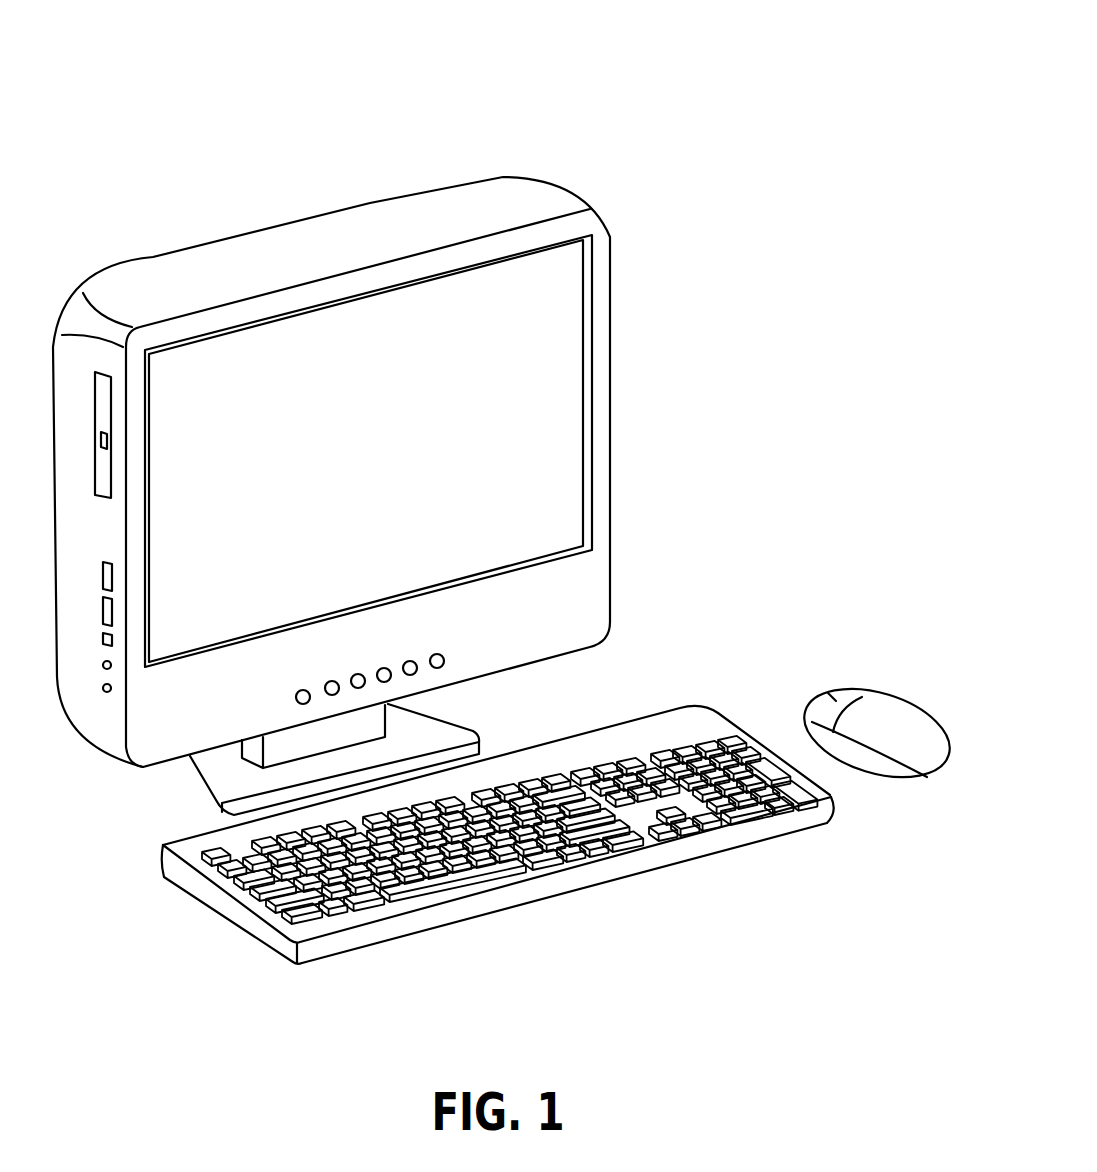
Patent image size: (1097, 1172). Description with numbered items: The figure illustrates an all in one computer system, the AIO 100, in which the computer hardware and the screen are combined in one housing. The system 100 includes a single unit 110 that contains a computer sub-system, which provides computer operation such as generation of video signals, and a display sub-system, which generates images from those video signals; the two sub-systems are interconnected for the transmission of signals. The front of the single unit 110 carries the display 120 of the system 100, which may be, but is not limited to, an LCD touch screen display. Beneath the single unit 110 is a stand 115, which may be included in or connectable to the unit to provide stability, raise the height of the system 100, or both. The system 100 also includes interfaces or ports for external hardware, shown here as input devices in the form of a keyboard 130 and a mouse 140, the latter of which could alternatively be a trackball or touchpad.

The all in one computer system 100 is at (657, 98).
The single unit 110 is at (627, 197).
The stand 115 is at (233, 783).
The display 120 is at (253, 428).
The keyboard 130 is at (490, 907).
The mouse 140 is at (908, 717).